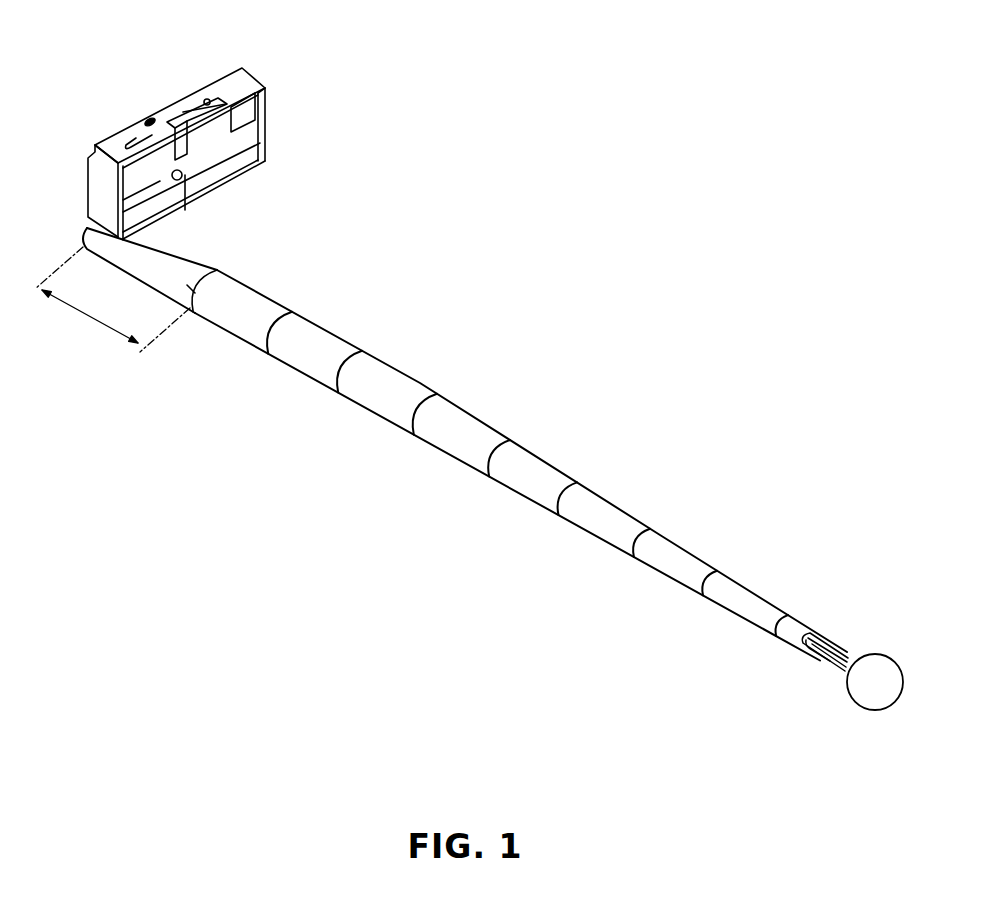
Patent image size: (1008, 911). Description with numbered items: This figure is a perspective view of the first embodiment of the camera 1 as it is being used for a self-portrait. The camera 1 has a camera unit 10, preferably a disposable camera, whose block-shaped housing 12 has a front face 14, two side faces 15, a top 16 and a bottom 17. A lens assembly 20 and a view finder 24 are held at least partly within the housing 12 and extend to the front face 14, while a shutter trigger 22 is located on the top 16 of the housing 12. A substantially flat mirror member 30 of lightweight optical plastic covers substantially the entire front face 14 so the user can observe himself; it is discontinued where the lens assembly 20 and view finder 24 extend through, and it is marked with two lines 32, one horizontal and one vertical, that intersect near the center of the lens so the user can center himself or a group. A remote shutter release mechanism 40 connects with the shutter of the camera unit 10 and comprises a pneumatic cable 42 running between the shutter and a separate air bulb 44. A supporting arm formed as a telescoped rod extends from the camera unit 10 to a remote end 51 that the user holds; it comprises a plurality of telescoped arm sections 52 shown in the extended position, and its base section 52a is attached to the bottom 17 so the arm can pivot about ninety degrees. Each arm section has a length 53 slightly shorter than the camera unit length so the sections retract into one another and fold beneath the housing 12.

The camera 1 is at (558, 140).
The camera unit 10 is at (258, 68).
The housing 12 is at (266, 143).
The front face 14 is at (237, 170).
The side faces 15 is at (104, 218).
The top 16 is at (222, 83).
The bottom 17 is at (233, 163).
The lens assembly 20 is at (173, 175).
The shutter trigger 22 is at (123, 138).
The view finder 24 is at (182, 108).
The mirror member 30 is at (140, 212).
The lines 32 is at (133, 203).
The remote shutter release mechanism 40 is at (842, 690).
The pneumatic cable 42 is at (825, 645).
The air bulb 44 is at (873, 653).
The remote end 51 is at (840, 677).
The arm sections 52 is at (253, 296).
The base section 52a is at (187, 285).
The length 53 is at (76, 310).